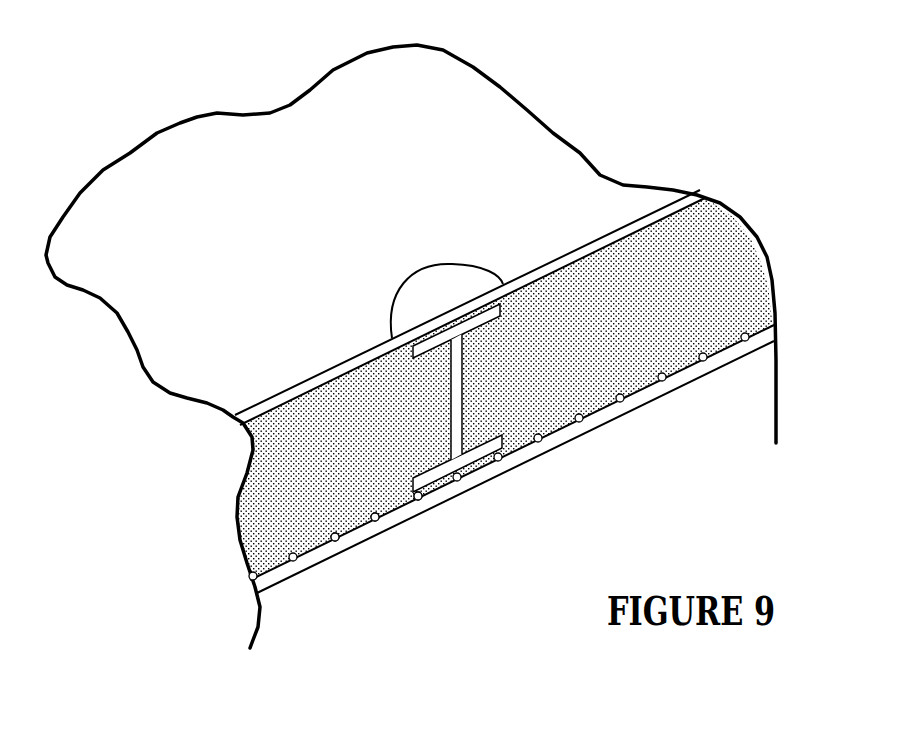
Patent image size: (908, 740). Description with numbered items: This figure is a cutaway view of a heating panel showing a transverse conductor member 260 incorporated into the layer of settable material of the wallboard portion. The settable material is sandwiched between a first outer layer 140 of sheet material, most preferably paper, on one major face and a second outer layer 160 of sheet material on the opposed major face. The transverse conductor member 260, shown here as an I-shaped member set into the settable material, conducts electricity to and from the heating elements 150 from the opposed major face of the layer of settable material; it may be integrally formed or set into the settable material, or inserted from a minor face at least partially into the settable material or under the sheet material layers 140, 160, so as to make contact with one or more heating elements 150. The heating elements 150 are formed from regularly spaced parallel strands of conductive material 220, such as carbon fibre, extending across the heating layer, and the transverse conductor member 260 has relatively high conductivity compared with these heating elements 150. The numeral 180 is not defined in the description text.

The first outer layer 140 is at (635, 230).
The heating element 150 is at (703, 350).
The second outer layer 160 is at (715, 372).
The inner layer 180 is at (752, 330).
The strands of conductive material 220 is at (420, 502).
The transverse conductor member 260 is at (457, 392).